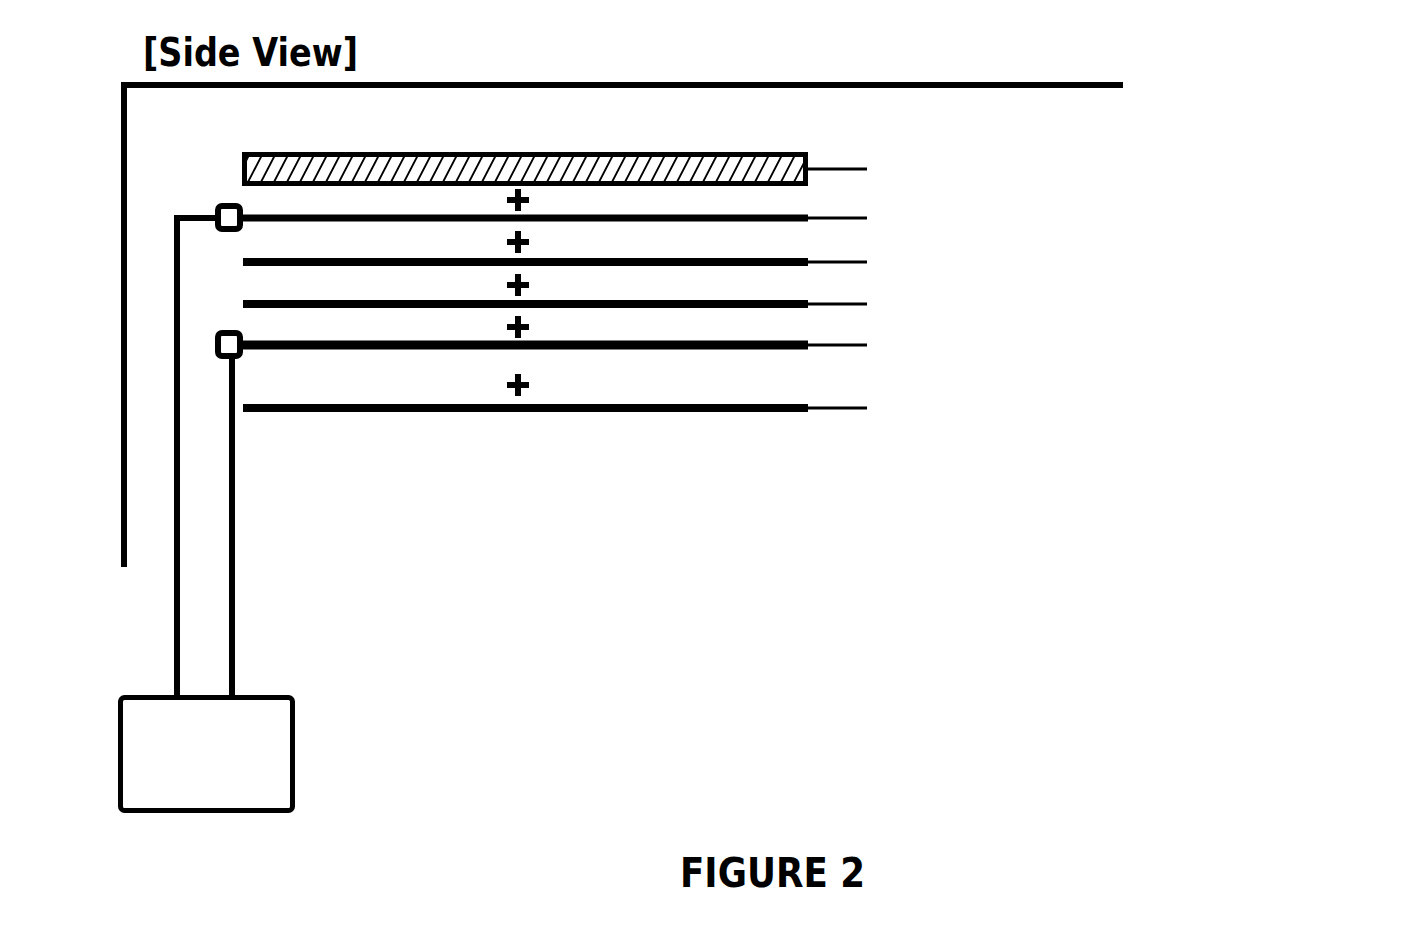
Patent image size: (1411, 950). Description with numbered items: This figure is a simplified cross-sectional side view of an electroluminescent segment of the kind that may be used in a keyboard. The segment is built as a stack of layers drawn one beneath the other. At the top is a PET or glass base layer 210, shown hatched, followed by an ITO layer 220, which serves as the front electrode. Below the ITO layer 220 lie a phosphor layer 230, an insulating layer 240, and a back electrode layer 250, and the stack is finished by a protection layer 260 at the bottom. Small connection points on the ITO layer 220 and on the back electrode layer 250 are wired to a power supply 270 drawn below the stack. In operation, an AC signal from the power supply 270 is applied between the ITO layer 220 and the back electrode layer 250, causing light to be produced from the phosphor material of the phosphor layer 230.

The PET or glass base layer 210 is at (1218, 174).
The ITO layer 220 is at (1272, 224).
The phosphor layer 230 is at (1140, 270).
The insulating layer 240 is at (1140, 310).
The back electrode layer 250 is at (1228, 350).
The protection layer 260 is at (1050, 413).
The power supply 270 is at (294, 757).